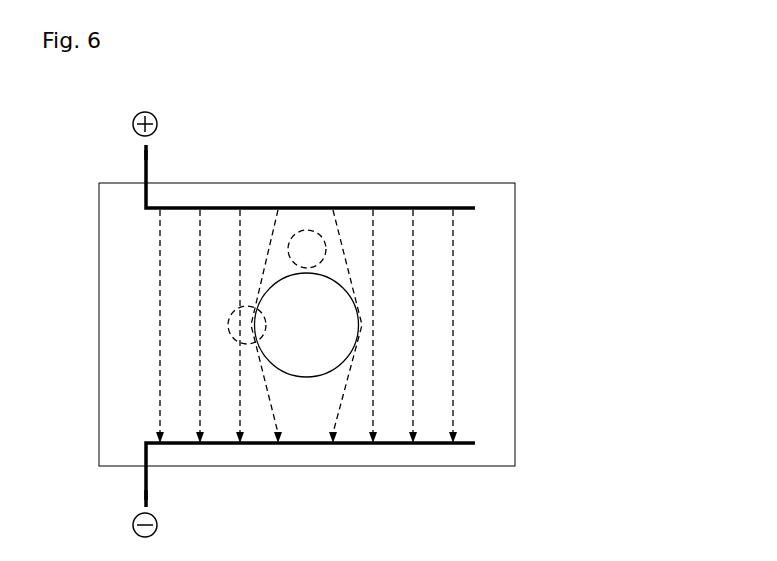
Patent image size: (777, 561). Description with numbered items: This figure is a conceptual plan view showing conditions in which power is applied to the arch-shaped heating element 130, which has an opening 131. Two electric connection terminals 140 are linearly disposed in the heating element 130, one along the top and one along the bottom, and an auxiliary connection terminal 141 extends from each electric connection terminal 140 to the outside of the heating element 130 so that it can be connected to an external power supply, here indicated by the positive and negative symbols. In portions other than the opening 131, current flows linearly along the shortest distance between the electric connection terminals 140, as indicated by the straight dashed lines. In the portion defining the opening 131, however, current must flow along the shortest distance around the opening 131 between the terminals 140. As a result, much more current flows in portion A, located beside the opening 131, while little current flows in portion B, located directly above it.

The arch-shaped heating element 130 is at (515, 355).
The opening 131 is at (325, 320).
The electric connection terminal 140 is at (221, 208).
The auxiliary connection terminal 141 is at (146, 146).
The portion A is at (228, 325).
The portion B is at (307, 229).